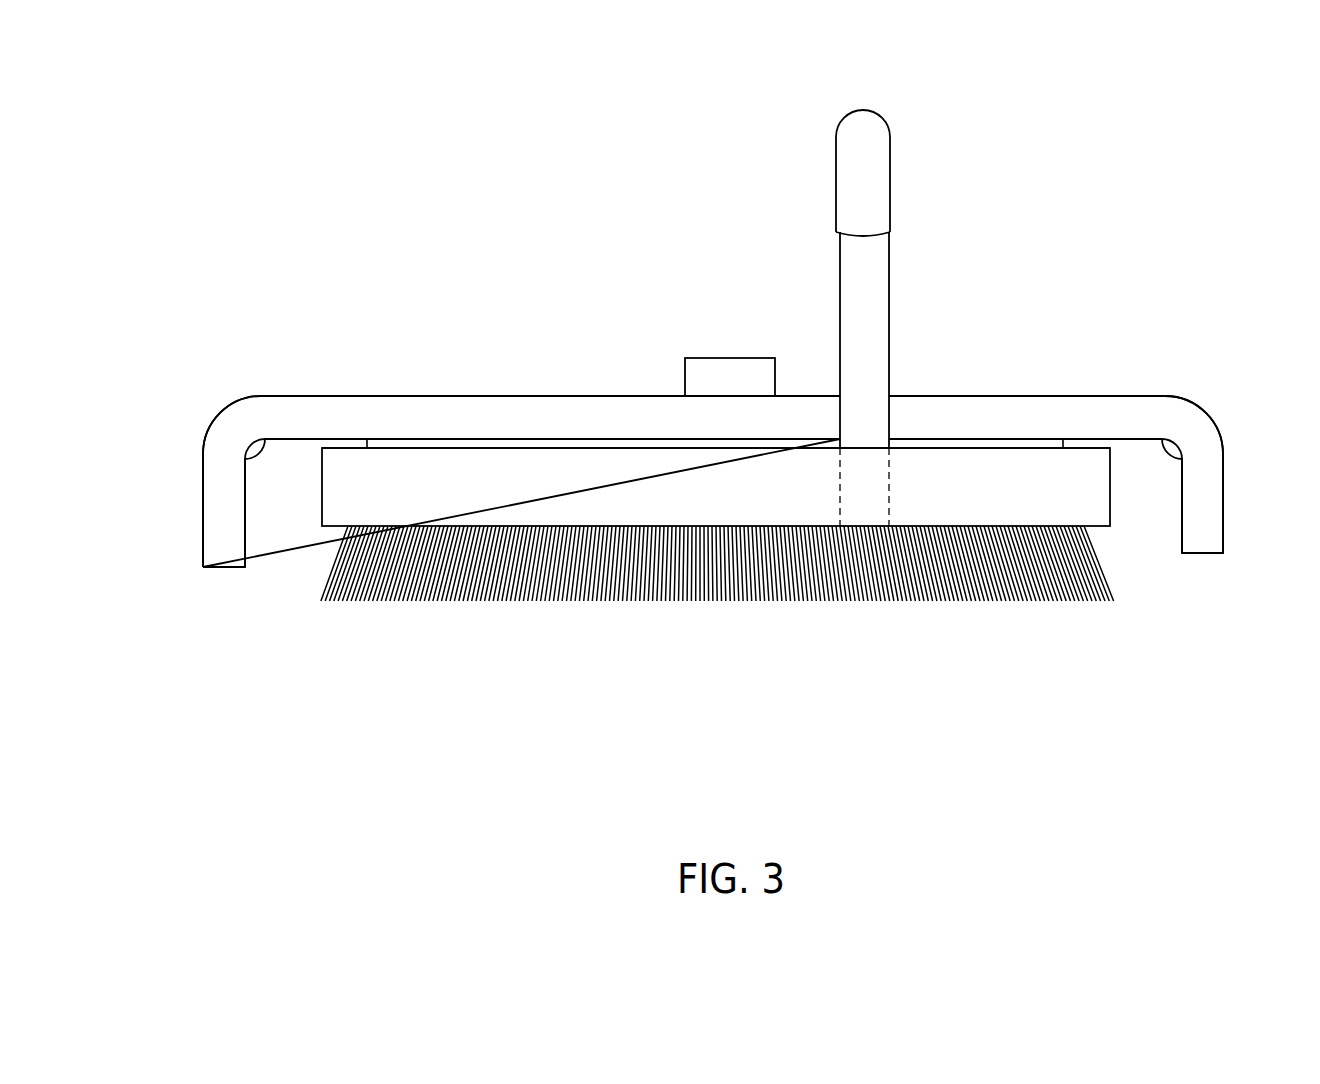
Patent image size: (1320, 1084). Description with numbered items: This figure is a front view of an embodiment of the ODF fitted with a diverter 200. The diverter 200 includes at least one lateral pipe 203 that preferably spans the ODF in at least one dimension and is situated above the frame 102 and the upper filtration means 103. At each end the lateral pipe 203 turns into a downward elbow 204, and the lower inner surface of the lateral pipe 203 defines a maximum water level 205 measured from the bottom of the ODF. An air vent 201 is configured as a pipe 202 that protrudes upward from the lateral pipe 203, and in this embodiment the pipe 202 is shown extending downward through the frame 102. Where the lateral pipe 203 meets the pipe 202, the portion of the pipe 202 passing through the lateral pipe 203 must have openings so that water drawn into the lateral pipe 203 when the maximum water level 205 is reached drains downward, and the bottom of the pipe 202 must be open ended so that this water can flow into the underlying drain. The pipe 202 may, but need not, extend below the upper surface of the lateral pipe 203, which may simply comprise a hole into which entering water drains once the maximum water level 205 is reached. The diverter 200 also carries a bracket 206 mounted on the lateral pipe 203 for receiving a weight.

The diverter 200 is at (1045, 172).
The air vent 201 is at (892, 160).
The pipe 202 is at (892, 322).
The lateral pipe 203 is at (563, 420).
The downward elbow 204 is at (1229, 461).
The maximum water level 205 is at (466, 436).
The bracket 206 is at (751, 356).
The frame 102 is at (320, 499).
The upper filtration means 103 is at (1001, 445).